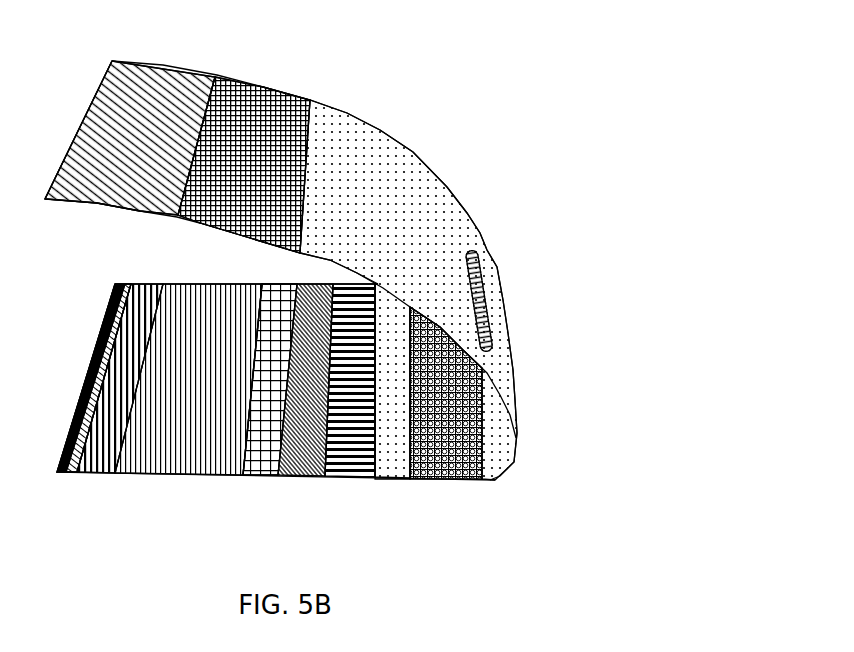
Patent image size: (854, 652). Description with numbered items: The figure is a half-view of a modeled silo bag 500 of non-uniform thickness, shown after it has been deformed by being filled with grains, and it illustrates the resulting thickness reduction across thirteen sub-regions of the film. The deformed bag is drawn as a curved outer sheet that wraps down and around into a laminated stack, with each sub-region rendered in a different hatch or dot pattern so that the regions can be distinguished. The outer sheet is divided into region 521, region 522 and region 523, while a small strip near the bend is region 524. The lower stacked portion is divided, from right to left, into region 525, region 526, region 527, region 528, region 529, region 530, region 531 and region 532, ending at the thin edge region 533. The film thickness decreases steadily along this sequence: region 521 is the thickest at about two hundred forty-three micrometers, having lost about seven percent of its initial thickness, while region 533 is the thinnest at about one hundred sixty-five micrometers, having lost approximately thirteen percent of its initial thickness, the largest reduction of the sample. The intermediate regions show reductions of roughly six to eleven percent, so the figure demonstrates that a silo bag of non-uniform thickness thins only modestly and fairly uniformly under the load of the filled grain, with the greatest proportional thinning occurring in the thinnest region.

The multilayer structure 500 is at (434, 86).
The region 521 is at (120, 61).
The region 522 is at (262, 87).
The region 523 is at (383, 135).
The region 524 is at (488, 280).
The region 525 is at (440, 462).
The region 526 is at (388, 462).
The region 527 is at (335, 459).
The region 528 is at (299, 478).
The region 529 is at (251, 473).
The region 530 is at (157, 469).
The region 531 is at (94, 463).
The region 532 is at (126, 287).
The region 533 is at (92, 352).